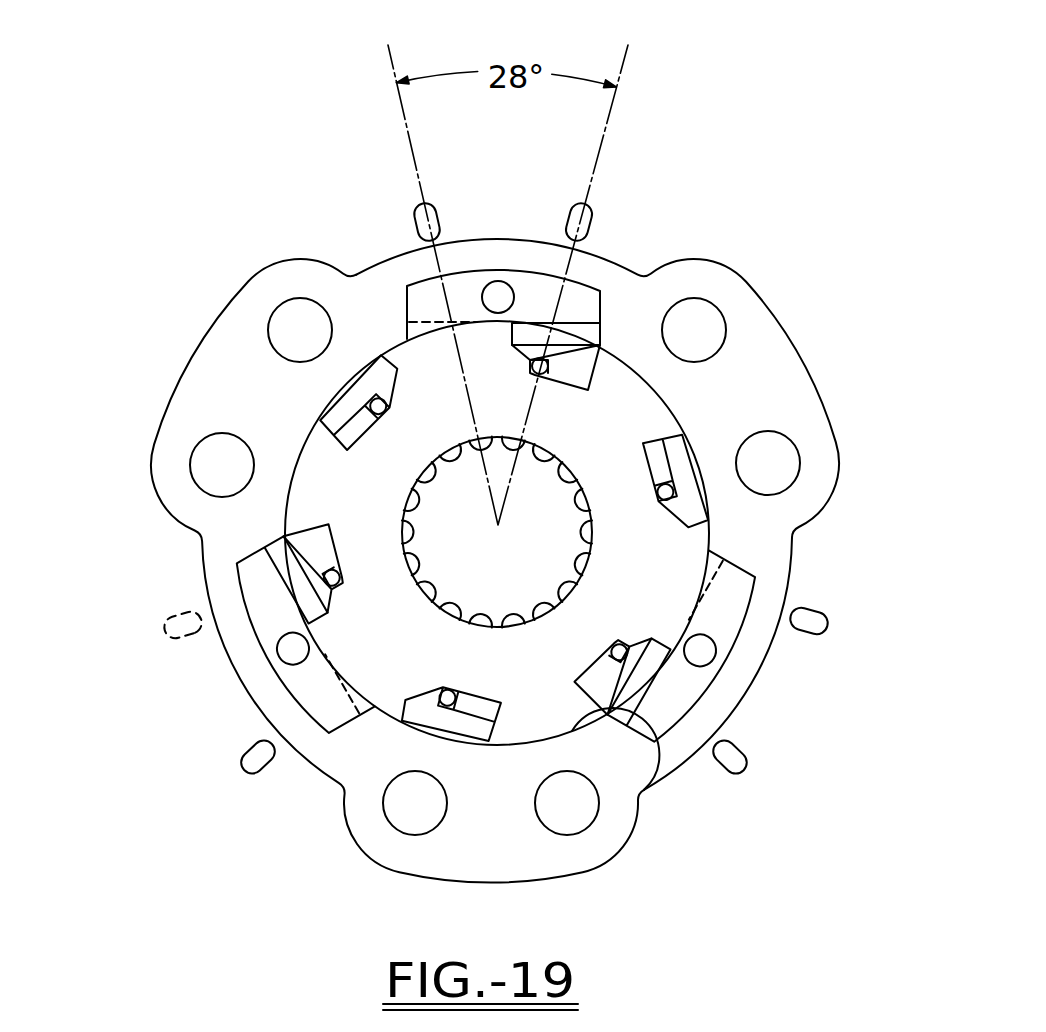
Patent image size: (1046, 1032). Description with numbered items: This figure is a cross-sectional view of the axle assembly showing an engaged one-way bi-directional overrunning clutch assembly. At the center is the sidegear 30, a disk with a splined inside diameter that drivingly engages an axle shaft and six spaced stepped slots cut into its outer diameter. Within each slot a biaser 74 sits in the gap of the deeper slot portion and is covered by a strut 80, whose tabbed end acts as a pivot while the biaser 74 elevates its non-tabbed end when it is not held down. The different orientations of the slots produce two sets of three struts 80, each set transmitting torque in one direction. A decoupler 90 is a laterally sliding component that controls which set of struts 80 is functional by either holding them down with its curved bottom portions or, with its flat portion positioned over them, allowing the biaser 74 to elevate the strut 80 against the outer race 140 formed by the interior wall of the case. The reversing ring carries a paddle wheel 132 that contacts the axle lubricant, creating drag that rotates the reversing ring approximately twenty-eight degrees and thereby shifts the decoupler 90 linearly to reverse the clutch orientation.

The sidegear 30 is at (340, 477).
The biaser 74 is at (625, 659).
The strut 80 is at (288, 572).
The decoupler 90 is at (723, 615).
The paddle wheel feature 132 is at (817, 611).
The outer race 140 is at (645, 788).